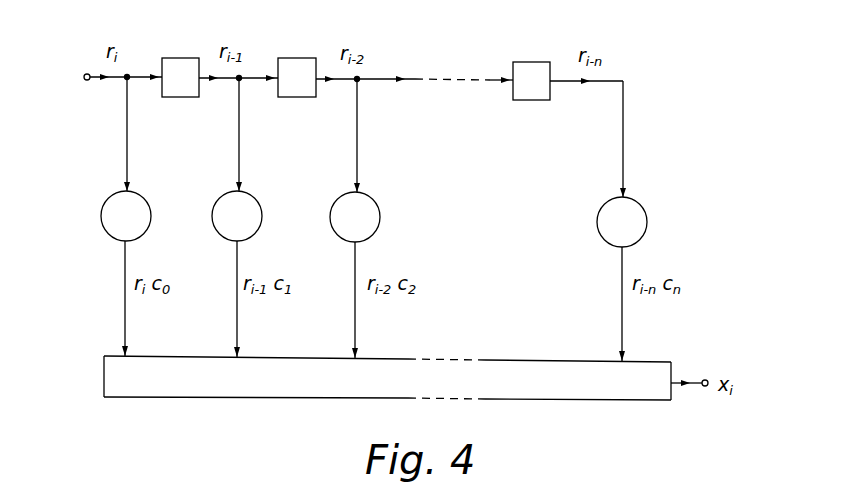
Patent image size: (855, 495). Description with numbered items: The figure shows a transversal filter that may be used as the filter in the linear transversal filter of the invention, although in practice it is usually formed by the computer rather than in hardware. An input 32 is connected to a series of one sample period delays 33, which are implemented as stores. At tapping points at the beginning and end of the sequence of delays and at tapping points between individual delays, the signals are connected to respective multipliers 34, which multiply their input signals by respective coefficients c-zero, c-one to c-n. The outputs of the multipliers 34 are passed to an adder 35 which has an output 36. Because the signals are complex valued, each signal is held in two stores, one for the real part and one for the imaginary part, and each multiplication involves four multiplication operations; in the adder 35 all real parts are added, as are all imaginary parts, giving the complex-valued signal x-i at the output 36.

The input 32 is at (87, 80).
The one sample period delays 33 is at (178, 58).
The multipliers 34 is at (145, 197).
The adder 35 is at (228, 398).
The output 36 is at (705, 380).